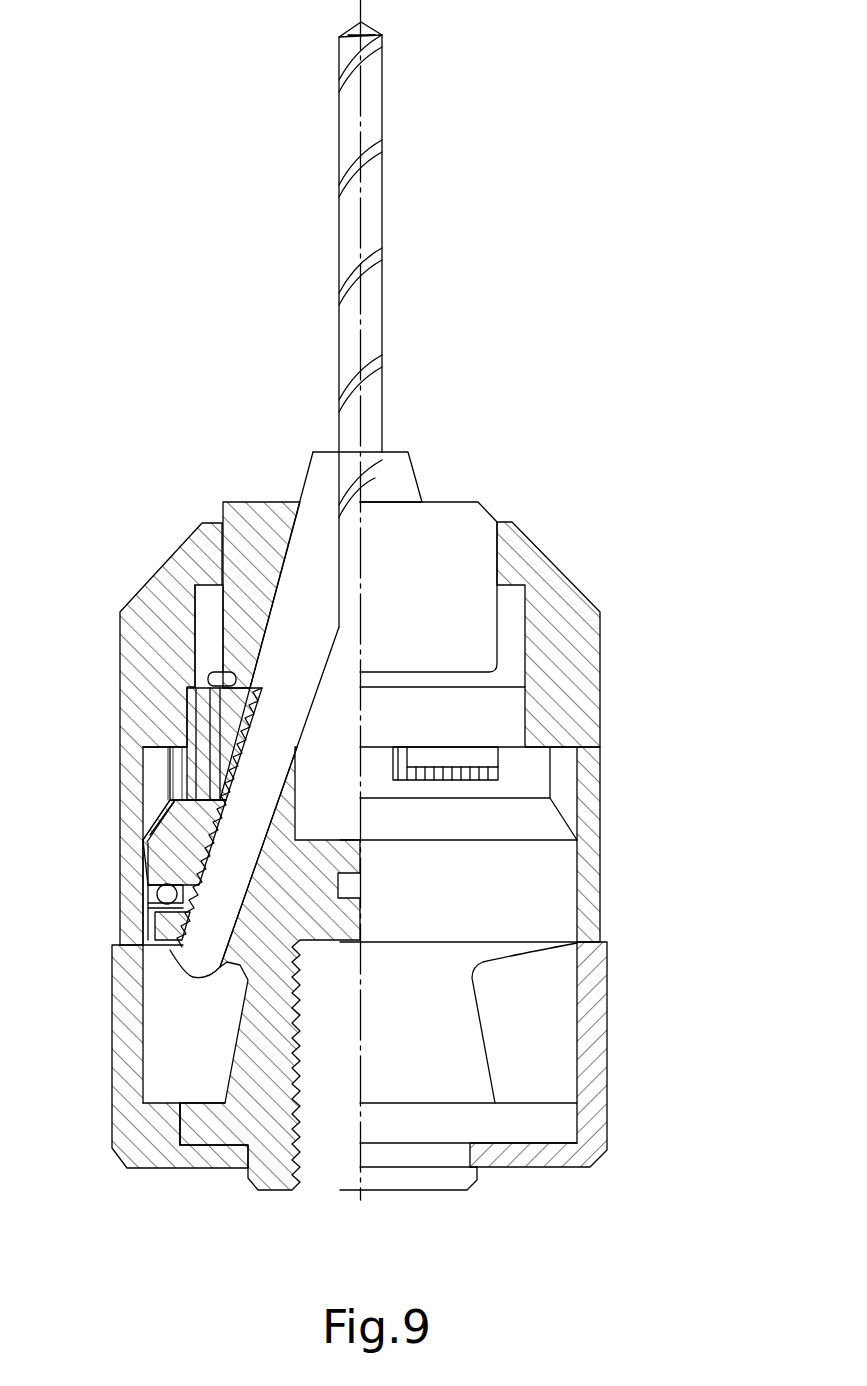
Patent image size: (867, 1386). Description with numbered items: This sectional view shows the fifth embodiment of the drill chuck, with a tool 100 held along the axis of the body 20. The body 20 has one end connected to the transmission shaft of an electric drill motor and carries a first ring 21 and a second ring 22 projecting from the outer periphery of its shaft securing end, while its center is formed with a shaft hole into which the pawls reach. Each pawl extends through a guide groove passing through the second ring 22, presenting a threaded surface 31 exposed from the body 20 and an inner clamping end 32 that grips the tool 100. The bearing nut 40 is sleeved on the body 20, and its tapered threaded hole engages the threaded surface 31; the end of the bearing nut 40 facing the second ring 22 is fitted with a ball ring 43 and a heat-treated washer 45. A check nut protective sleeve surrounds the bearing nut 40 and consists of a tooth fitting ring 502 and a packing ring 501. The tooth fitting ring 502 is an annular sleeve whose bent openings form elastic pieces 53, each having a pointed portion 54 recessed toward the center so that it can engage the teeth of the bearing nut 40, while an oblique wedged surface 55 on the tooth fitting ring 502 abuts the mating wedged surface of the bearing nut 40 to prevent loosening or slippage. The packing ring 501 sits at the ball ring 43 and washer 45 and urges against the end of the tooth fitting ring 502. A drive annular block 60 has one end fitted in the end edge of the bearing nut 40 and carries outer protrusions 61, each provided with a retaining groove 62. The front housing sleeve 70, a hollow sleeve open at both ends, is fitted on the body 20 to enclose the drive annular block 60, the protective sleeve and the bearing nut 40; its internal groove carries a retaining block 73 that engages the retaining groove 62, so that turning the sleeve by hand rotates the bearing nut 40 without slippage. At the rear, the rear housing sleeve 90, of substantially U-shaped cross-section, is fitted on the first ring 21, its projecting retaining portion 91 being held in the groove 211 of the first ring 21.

The drill bit 100 is at (375, 178).
The body 20 is at (365, 772).
The first ring 21 is at (406, 1172).
The groove 211 is at (190, 1130).
The second ring 22 is at (168, 975).
The threaded surface 31 is at (166, 692).
The clamping end 32 is at (290, 583).
The bearing nut 40 is at (129, 870).
The ball ring 43 is at (155, 893).
The heat-treated washer 45 is at (150, 925).
The elastic piece 53 is at (377, 766).
The pointed portion 54 is at (418, 762).
The oblique wedged surface 55 is at (155, 812).
The drive annular block 60 is at (364, 891).
The protrusion 61 is at (190, 722).
The retaining groove 62 is at (195, 735).
The front housing sleeve 70 is at (354, 718).
The retaining block 73 is at (185, 735).
The rear housing sleeve 90 is at (358, 1055).
The retaining portion 91 is at (165, 1120).
The packing ring 501 is at (145, 940).
The tooth fitting ring 502 is at (153, 890).